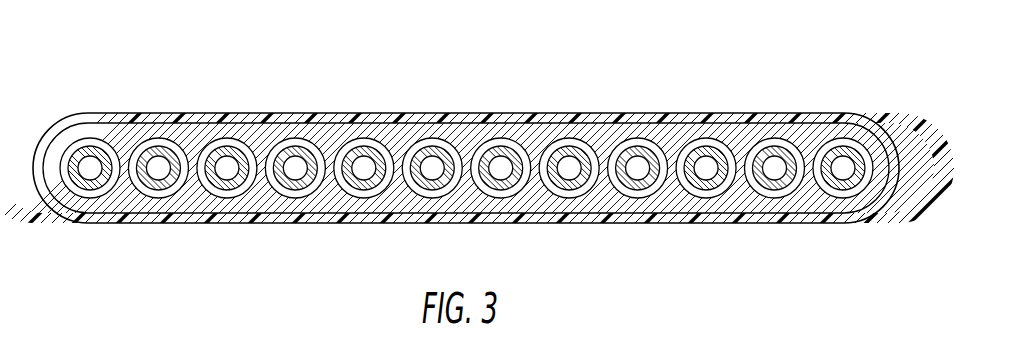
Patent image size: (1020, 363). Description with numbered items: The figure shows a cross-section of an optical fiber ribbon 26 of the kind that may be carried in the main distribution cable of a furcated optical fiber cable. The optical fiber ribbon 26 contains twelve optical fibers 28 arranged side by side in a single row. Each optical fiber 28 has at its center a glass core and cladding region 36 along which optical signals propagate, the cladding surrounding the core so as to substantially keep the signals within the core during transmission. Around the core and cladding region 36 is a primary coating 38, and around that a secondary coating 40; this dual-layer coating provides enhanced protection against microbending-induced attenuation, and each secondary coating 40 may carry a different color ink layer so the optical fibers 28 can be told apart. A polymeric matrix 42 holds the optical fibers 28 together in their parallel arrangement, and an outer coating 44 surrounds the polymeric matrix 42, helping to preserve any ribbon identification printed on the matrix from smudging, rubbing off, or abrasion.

The optical fiber ribbon 26 is at (134, 54).
The optical fibers 28 is at (258, 134).
The core and cladding region 36 is at (431, 176).
The primary coating 38 is at (417, 139).
The secondary coating 40 is at (450, 128).
The polymeric matrix 42 is at (548, 113).
The outer coating 44 is at (637, 115).